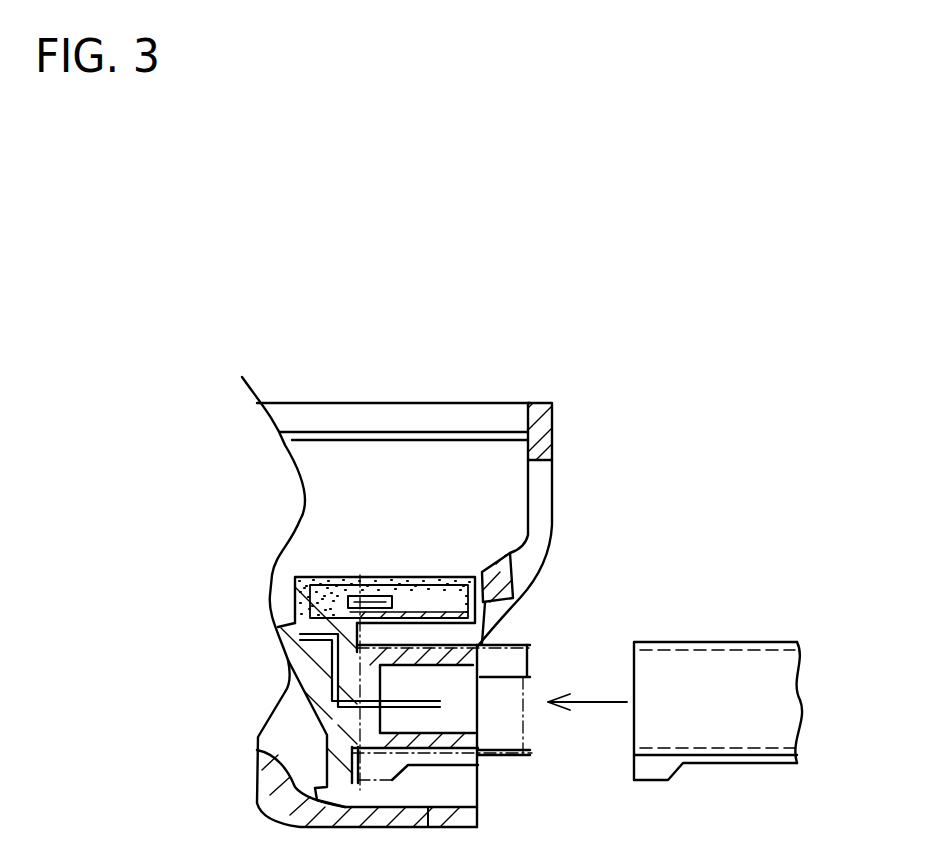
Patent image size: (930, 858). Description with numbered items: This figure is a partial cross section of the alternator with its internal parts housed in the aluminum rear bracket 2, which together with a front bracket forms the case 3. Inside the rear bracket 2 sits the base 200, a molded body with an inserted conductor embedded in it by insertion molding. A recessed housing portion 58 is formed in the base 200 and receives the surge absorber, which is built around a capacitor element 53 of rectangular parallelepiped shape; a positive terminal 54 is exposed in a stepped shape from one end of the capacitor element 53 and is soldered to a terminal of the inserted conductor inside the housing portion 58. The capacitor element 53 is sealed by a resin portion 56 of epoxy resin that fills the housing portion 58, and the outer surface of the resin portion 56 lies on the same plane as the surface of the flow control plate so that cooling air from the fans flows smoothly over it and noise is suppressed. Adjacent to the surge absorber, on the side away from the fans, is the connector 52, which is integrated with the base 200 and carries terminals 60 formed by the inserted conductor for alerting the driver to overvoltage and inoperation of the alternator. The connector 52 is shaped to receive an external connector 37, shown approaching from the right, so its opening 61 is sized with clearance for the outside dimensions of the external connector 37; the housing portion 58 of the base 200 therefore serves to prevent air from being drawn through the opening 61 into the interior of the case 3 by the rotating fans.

The case 3 is at (575, 401).
The rear bracket 2 is at (556, 443).
The external connector 37 is at (762, 645).
The connector 52 is at (490, 633).
The capacitor element 53 is at (415, 603).
The positive terminal 54 is at (358, 578).
The resin portion 56 is at (345, 578).
The housing portion 58 is at (458, 603).
The terminals 60 is at (440, 703).
The opening 61 is at (405, 808).
The base 200 is at (278, 640).